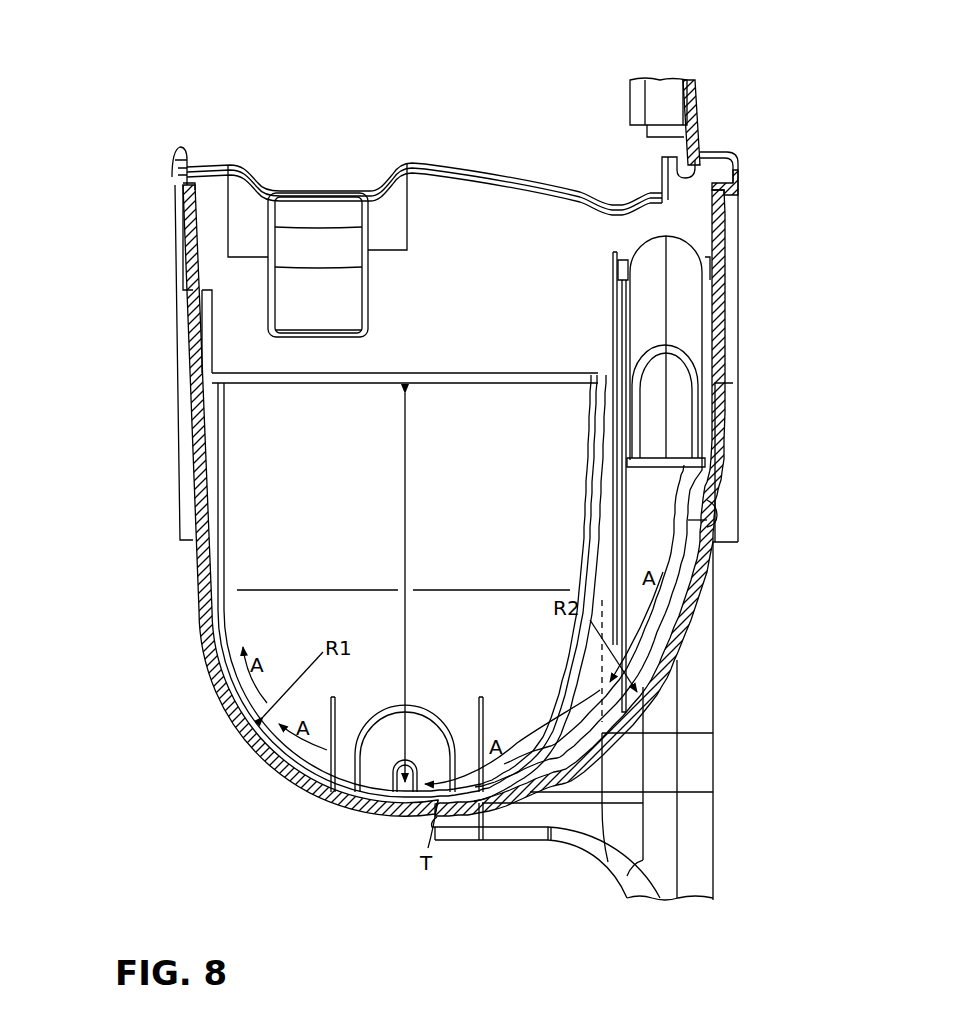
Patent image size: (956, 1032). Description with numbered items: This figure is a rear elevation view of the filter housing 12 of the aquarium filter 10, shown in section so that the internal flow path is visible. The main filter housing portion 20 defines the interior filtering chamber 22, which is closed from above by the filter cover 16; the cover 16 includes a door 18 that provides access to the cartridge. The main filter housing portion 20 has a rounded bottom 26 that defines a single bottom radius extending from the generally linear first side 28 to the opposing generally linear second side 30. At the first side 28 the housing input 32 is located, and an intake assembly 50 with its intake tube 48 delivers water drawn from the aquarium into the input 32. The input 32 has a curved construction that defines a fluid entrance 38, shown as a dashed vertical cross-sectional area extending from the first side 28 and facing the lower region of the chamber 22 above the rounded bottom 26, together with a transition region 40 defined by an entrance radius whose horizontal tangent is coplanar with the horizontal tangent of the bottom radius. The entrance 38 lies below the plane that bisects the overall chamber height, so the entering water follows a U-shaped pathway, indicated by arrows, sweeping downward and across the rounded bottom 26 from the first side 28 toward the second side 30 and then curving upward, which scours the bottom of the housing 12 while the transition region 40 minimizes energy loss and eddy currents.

The aquarium filter 10 is at (237, 103).
The filter housing 12 is at (200, 558).
The filter cover 16 is at (531, 180).
The door 18 is at (697, 105).
The main filter housing portion 20 is at (193, 445).
The interior filtering chamber 22 is at (347, 542).
The bottom 26 is at (357, 810).
The first side 28 is at (600, 603).
The second side 30 is at (205, 600).
The housing input 32 is at (720, 395).
The fluid entrance 38 is at (583, 682).
The transition region 40 is at (558, 768).
The intake tube 48 is at (690, 315).
The intake assembly 50 is at (733, 833).